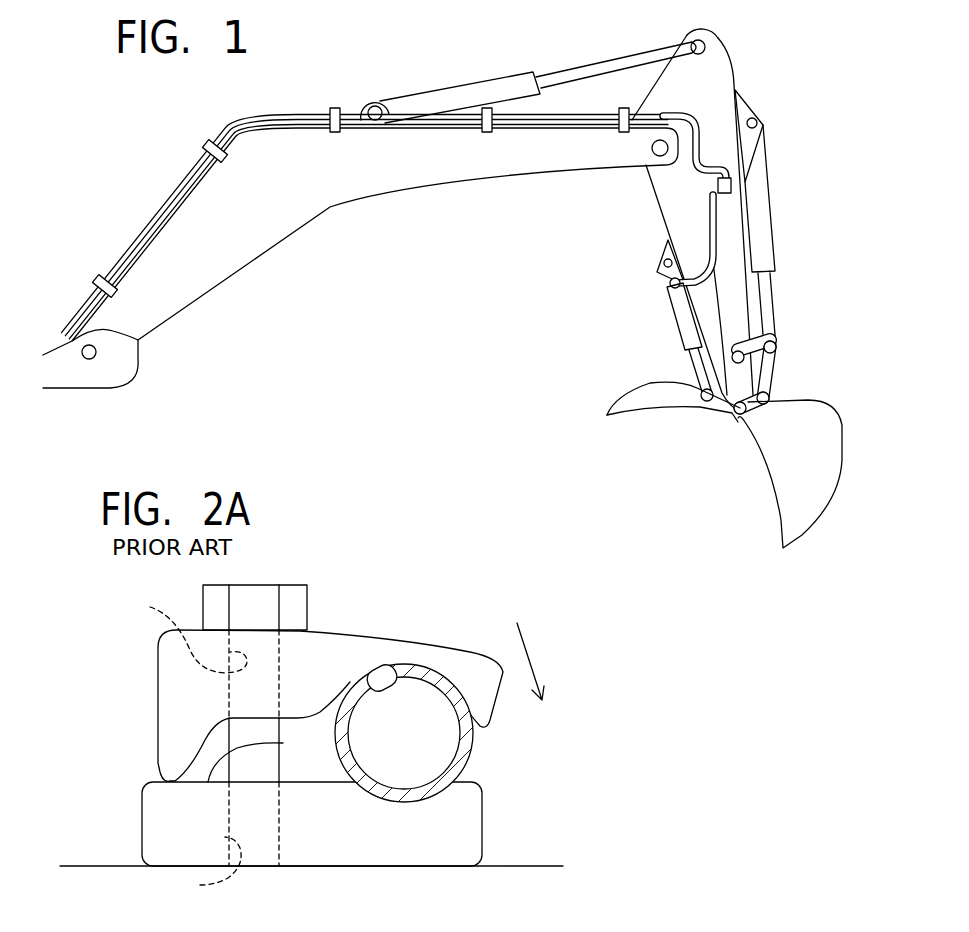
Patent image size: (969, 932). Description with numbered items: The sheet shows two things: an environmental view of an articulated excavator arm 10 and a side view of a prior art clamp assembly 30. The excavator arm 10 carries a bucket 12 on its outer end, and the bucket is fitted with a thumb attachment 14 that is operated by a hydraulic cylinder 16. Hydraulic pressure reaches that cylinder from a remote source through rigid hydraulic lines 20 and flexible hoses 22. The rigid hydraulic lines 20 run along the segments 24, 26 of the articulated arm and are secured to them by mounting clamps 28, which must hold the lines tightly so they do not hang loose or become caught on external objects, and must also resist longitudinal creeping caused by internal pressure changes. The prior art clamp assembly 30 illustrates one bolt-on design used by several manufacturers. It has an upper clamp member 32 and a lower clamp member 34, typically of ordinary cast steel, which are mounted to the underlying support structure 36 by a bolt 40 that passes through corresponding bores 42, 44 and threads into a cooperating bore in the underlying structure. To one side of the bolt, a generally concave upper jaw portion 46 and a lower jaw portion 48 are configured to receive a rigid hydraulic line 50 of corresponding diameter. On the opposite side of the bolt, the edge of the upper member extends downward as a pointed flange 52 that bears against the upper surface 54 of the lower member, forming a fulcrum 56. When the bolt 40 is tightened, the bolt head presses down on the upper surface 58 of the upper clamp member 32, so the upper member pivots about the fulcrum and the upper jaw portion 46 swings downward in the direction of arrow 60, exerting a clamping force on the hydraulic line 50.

In FIG. 1, the articulated excavator arm 10 is at (232, 118).
In FIG. 1, the bucket 12 is at (788, 493).
In FIG. 1, the thumb attachment 14 is at (633, 398).
In FIG. 1, the hydraulic cylinder 16 is at (683, 316).
In FIG. 1, the rigid hydraulic lines 20 is at (152, 230).
In FIG. 1, the flexible hoses 22 is at (734, 85).
In FIG. 1, the segment of the articulated arm 24 is at (250, 235).
In FIG. 1, the segment of the articulated arm 26 is at (677, 203).
In FIG. 1, the mounting clamps 28 is at (214, 153).
In FIG. 2A, the prior art clamp assembly 30 is at (440, 621).
In FIG. 2A, the upper clamp member 32 is at (152, 704).
In FIG. 2A, the lower clamp member 34 is at (139, 814).
In FIG. 2A, the underlying support structure 36 is at (522, 866).
In FIG. 2A, the bolt 40 is at (270, 590).
In FIG. 2A, the bore 42 is at (185, 635).
In FIG. 2A, the bore 44 is at (207, 871).
In FIG. 2A, the upper jaw portion 46 is at (392, 668).
In FIG. 2A, the lower jaw portion 48 is at (405, 797).
In FIG. 2A, the rigid hydraulic line 50 is at (473, 740).
In FIG. 2A, the pointed flange 52 is at (172, 758).
In FIG. 2A, the upper surface of the lower clamp member 54 is at (283, 743).
In FIG. 2A, the fulcrum 56 is at (153, 768).
In FIG. 2A, the upper surface of the upper clamp member 58 is at (340, 628).
In FIG. 2A, the arrow 60 is at (533, 650).